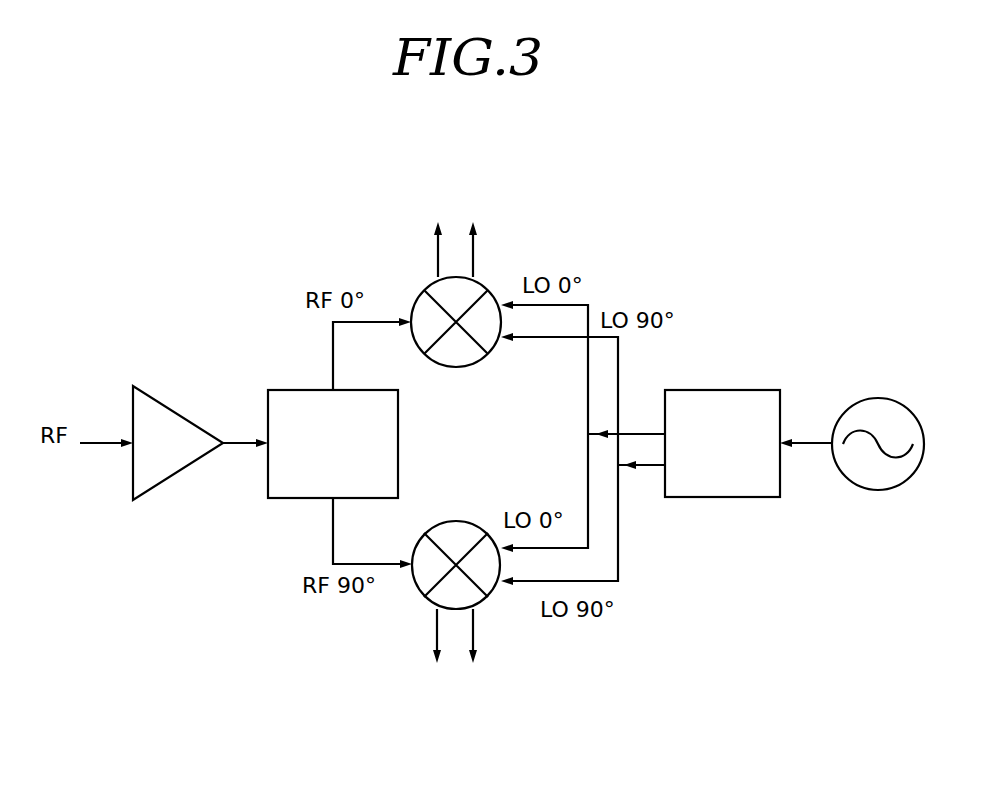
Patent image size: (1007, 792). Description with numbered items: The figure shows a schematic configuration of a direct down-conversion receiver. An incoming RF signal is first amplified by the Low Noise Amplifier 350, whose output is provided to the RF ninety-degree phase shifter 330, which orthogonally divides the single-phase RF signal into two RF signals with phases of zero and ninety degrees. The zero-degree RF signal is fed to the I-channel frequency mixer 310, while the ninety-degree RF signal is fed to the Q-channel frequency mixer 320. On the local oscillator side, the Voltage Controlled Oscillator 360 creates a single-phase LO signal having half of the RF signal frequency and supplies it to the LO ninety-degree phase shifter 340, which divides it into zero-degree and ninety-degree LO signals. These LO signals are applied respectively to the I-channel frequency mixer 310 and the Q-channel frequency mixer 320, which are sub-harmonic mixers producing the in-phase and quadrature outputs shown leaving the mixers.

The I-channel frequency mixer 310 is at (412, 298).
The Q-channel frequency mixer 320 is at (412, 582).
The RF 90° phase shifter 330 is at (268, 402).
The LO 90° phase shifter 340 is at (753, 390).
The Low Noise Amplifier 350 is at (133, 390).
The Voltage Controlled Oscillator 360 is at (900, 482).